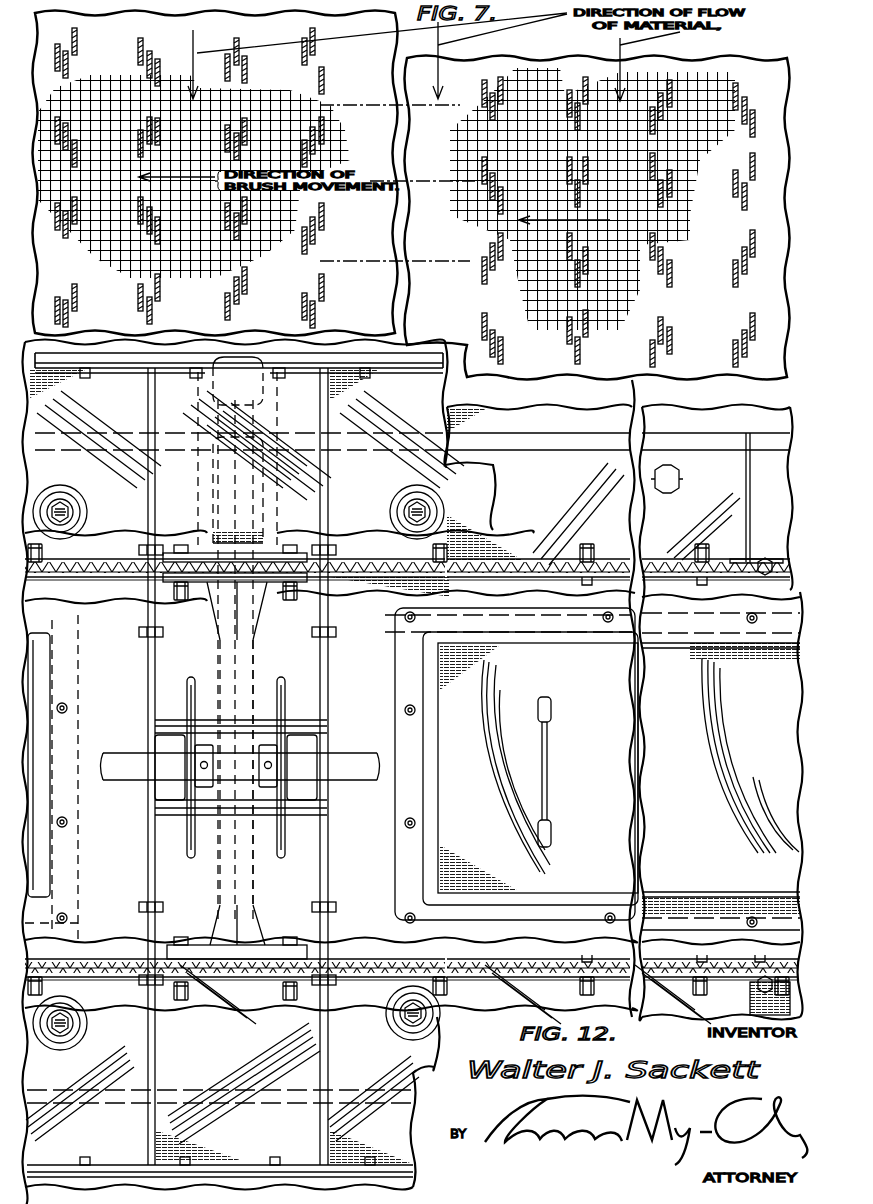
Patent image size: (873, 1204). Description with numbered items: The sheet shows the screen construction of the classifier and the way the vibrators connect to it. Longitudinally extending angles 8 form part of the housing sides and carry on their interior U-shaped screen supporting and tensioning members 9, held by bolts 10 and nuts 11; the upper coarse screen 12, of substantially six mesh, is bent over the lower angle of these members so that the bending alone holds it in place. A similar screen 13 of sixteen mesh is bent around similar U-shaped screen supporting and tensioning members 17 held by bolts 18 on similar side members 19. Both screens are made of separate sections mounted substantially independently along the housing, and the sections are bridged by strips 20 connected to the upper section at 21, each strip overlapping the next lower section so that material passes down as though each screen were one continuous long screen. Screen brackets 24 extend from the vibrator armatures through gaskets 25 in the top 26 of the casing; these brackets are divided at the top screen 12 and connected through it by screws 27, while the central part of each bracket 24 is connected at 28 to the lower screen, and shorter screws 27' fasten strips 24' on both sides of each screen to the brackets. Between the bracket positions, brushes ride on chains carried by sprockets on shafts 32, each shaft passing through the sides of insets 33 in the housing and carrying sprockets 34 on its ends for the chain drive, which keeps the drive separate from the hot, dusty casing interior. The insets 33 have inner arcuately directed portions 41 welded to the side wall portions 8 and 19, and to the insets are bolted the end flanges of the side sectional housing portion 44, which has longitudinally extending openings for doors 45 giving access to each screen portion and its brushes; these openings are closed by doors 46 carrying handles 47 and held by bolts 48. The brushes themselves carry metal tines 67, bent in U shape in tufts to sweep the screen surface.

In FIG. 12, the longitudinally extending angles 8 is at (560, 402).
In FIG. 12, the U-shaped screen supporting and tensioning members 9 is at (538, 499).
In FIG. 12, the bolts 10 is at (410, 500).
In FIG. 12, the nuts 11 is at (90, 513).
In FIG. 12, the upper coarse screen 12 is at (340, 562).
In FIG. 7, the screen 13 is at (411, 195).
In FIG. 12, the screen 13 is at (470, 962).
In FIG. 12, the U-shaped screen supporting and tensioning members 17 is at (338, 988).
In FIG. 12, the bolts 18 is at (405, 1020).
In FIG. 12, the side members 19 is at (78, 1023).
In FIG. 12, the strips 20 is at (745, 563).
In FIG. 12, the connection 21 is at (765, 561).
In FIG. 12, the screen brackets 24 is at (244, 648).
In FIG. 12, the strips 24' is at (411, 747).
In FIG. 12, the gaskets 25 is at (170, 383).
In FIG. 12, the top 26 is at (130, 360).
In FIG. 12, the screws 27 is at (235, 797).
In FIG. 12, the shorter screws 27' is at (408, 762).
In FIG. 12, the connection 28 is at (305, 948).
In FIG. 12, the shafts 32 is at (128, 753).
In FIG. 12, the insets 33 is at (300, 822).
In FIG. 12, the sprockets 34 is at (185, 832).
In FIG. 12, the inner arcuately directed portions 41 is at (255, 772).
In FIG. 12, the side sectional housing portion 44 is at (330, 774).
In FIG. 12, the openings for doors 45 is at (50, 683).
In FIG. 12, the doors 46 is at (721, 681).
In FIG. 12, the handles 47 is at (552, 757).
In FIG. 12, the bolts 48 is at (414, 820).
In FIG. 7, the metal tines 67 is at (305, 297).